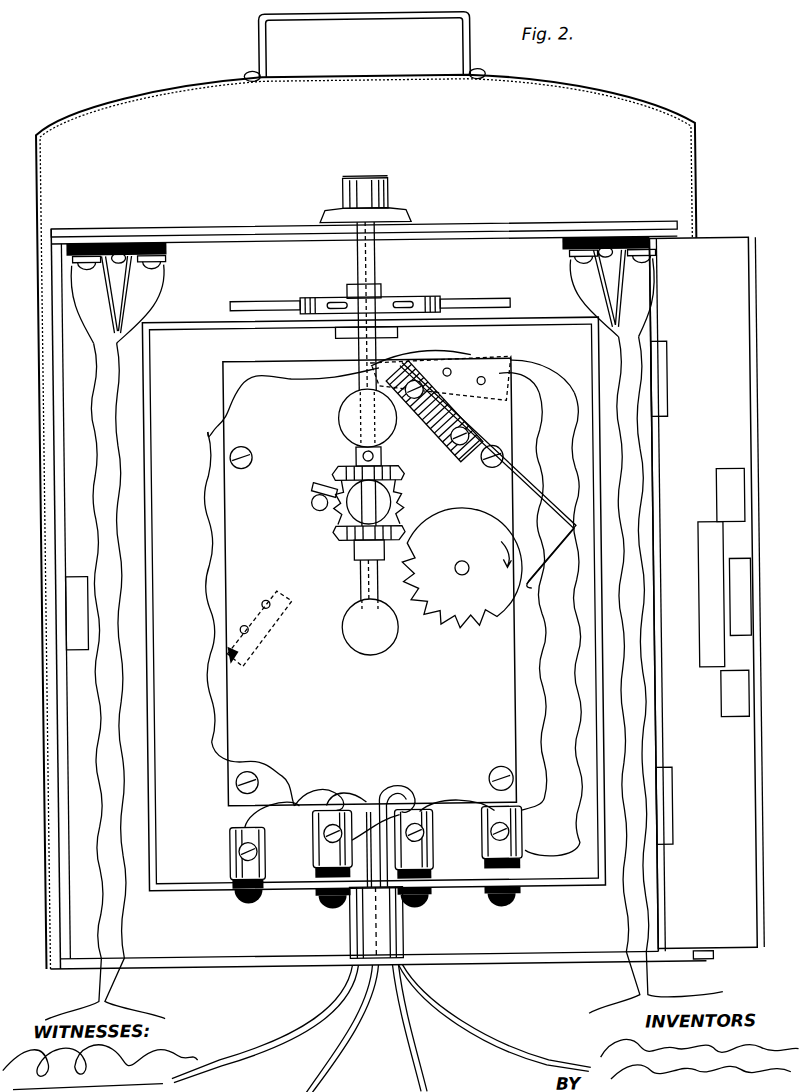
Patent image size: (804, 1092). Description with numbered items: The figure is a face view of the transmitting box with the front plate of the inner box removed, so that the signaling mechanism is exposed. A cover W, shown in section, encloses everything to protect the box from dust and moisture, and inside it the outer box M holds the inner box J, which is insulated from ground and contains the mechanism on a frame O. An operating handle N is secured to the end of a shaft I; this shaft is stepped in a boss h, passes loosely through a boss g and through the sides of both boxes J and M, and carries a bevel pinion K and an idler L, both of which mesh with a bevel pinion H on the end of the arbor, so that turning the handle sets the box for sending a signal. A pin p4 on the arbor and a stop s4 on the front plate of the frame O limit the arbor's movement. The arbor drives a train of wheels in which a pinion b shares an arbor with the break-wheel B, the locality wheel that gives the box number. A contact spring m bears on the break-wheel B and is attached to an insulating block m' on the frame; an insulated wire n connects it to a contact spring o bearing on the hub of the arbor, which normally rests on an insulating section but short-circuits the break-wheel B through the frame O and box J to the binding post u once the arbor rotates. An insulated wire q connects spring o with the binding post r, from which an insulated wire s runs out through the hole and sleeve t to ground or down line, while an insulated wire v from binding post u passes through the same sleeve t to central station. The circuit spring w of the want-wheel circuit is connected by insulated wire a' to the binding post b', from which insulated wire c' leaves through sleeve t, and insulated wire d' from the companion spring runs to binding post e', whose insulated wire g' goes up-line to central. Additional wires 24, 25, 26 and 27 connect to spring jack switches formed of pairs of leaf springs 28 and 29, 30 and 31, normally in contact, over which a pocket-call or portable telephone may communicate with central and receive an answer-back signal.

The cover W is at (558, 88).
The outer box M is at (452, 244).
The operating handle N is at (370, 198).
The shaft I is at (379, 270).
The box J is at (515, 310).
The insulated wire n is at (286, 372).
The insulated wire q is at (260, 760).
The circuit spring w is at (432, 360).
The boss g is at (354, 418).
The bevel pinion K is at (355, 458).
The bevel pinion H is at (402, 498).
The pin p4 is at (322, 488).
The stop s4 is at (316, 509).
The idler L is at (346, 540).
The boss h is at (341, 634).
The break-wheel B is at (462, 567).
The pinion b is at (465, 560).
The insulating block m' is at (434, 415).
The contact spring m is at (488, 474).
The insulated wire d' is at (530, 591).
The insulated wire a' is at (554, 607).
The contact spring o is at (270, 588).
The frame O is at (370, 582).
The binding post u is at (223, 856).
The insulated wire v is at (325, 859).
The binding post r is at (318, 808).
The binding post e' is at (424, 858).
The insulated wire c' is at (470, 936).
The binding post b' is at (512, 856).
The insulated wire g' is at (413, 929).
The sleeve t is at (399, 937).
The insulated wire s is at (324, 1078).
The wire v' is at (264, 1023).
The additional wire 24 is at (92, 510).
The additional wire 25 is at (135, 642).
The additional wire 26 is at (605, 636).
The additional wire 27 is at (648, 550).
The leaf spring 28 is at (112, 296).
The leaf spring 29 is at (125, 300).
The leaf spring 30 is at (604, 287).
The leaf spring 31 is at (620, 292).